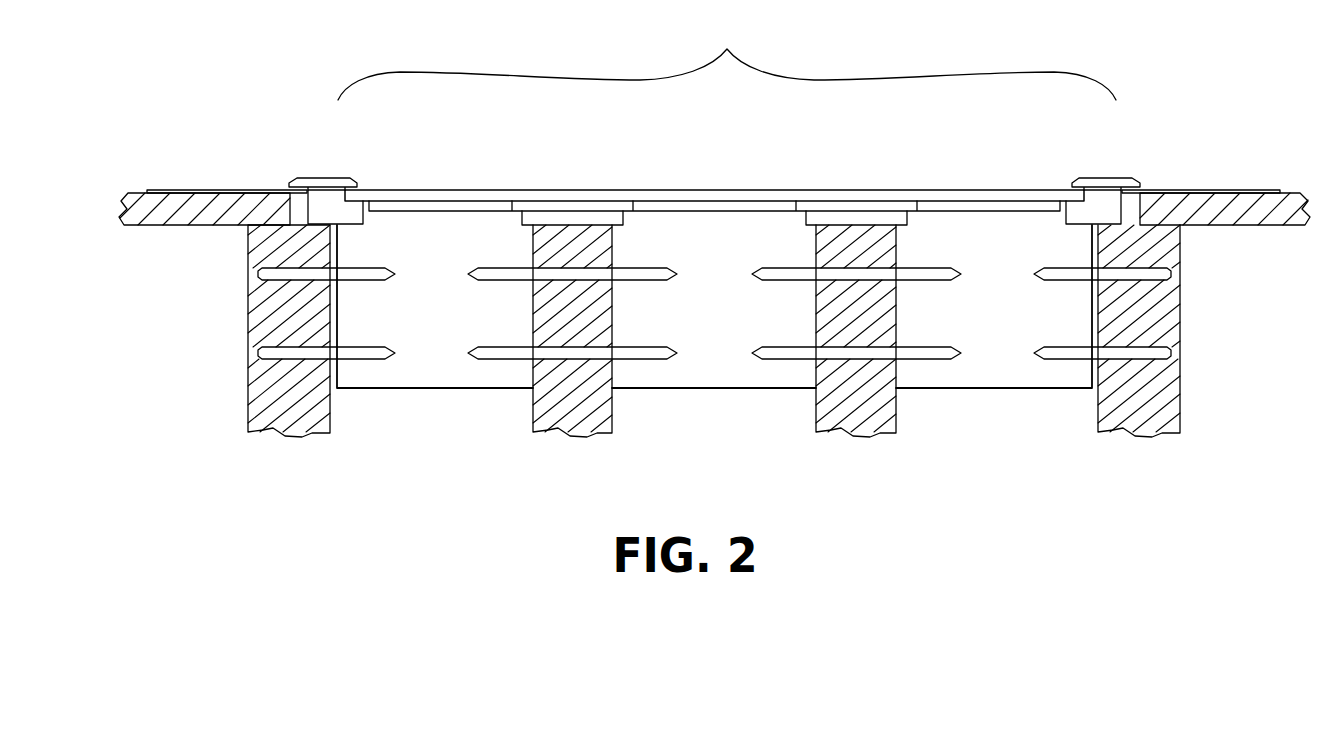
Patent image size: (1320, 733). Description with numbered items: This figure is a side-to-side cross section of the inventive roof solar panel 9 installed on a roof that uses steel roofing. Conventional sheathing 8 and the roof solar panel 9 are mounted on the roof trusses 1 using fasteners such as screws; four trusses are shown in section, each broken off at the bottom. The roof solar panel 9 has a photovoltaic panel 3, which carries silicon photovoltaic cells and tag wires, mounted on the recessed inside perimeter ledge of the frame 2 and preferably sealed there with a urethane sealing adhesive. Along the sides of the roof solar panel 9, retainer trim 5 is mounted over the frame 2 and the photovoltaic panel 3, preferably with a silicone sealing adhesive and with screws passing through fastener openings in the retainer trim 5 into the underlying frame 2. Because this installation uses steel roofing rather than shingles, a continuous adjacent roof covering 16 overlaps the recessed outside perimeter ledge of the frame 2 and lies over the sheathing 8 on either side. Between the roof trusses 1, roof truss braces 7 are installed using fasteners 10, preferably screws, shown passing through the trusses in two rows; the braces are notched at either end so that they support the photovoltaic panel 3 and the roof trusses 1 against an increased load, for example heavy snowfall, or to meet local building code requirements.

The roof truss 1 is at (285, 437).
The frame 2 is at (308, 210).
The photovoltaic panel 3 is at (523, 190).
The retainer trim 5 is at (322, 178).
The roof truss brace 7 is at (463, 388).
The sheathing 8 is at (183, 225).
The roof solar panel 9 is at (727, 58).
The fastener 10 is at (257, 274).
The continuous adjacent roof covering 16 is at (180, 190).